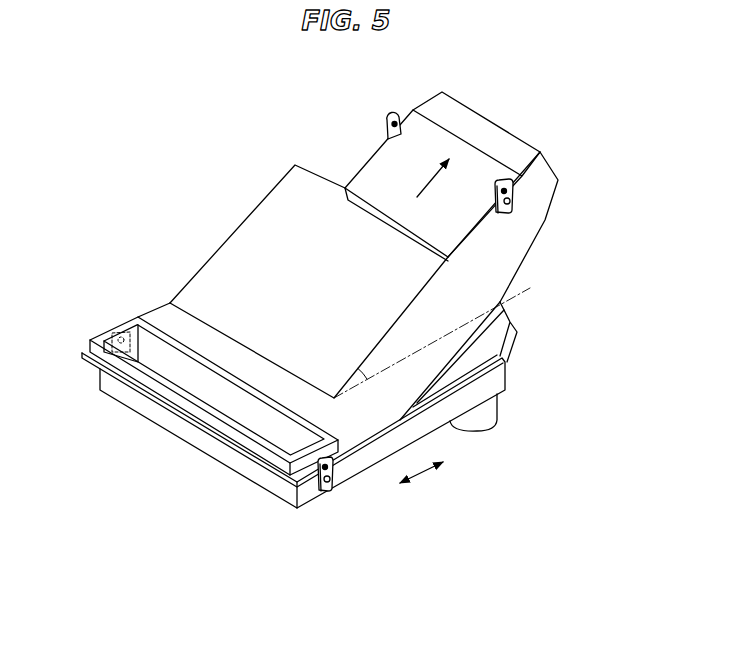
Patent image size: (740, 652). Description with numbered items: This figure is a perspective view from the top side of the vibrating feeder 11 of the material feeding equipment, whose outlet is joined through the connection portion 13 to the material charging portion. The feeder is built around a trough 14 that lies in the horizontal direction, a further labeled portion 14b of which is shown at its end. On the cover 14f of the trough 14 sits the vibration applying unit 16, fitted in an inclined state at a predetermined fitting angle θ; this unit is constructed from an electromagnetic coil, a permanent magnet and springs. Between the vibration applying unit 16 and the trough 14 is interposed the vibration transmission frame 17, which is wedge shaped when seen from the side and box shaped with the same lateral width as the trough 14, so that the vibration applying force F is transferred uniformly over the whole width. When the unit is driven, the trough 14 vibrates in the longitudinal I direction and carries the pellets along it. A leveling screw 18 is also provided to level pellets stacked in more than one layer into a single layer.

The vibrating feeder 11 is at (192, 176).
The connection portion 13 is at (512, 460).
The trough 14 is at (365, 481).
The tray frame opening 14b is at (158, 327).
The cover 14f is at (198, 335).
The vibration applying unit 16 is at (544, 247).
The vibration transmission frame 17 is at (520, 318).
The leveling screw 18 is at (390, 112).